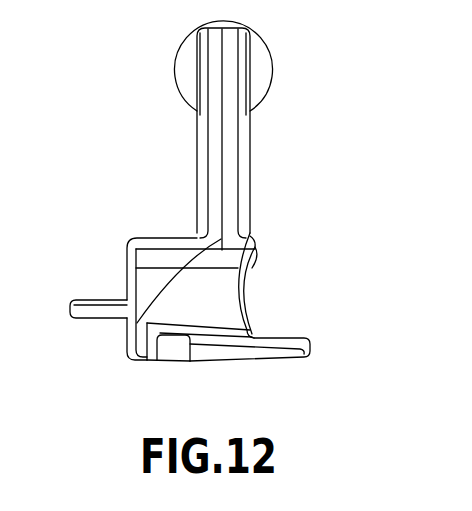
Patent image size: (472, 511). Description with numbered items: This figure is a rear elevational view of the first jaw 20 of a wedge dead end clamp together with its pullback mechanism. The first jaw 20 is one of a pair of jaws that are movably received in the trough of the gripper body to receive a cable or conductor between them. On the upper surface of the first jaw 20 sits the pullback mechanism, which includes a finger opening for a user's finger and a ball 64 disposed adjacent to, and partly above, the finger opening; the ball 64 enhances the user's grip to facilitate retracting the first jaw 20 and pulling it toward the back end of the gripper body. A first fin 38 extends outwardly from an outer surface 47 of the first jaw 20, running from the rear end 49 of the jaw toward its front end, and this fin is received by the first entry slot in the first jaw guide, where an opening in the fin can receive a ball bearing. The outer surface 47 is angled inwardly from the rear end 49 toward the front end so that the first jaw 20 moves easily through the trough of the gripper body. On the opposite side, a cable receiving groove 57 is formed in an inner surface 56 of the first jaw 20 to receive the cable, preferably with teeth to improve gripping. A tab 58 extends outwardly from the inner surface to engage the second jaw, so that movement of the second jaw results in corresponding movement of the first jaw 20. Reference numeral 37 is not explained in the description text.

The first jaw 20 is at (165, 165).
The ball 64 is at (261, 47).
The inner surface 56 is at (254, 252).
The inner wall 37 is at (252, 263).
The cable receiving groove 57 is at (249, 290).
The tab 58 is at (310, 348).
The first fin 38 is at (86, 300).
The outer surface 47 is at (125, 338).
The rear end 49 is at (198, 305).